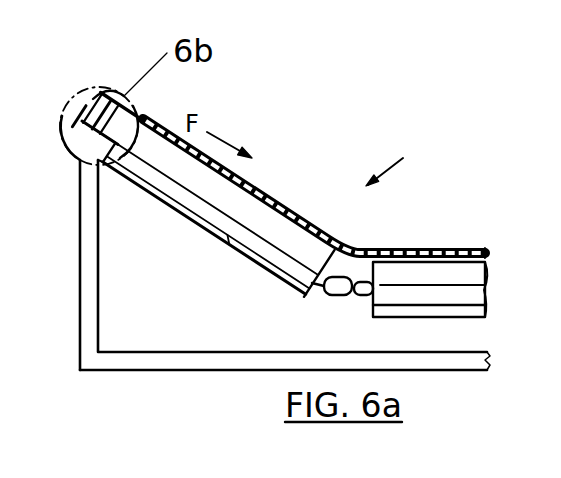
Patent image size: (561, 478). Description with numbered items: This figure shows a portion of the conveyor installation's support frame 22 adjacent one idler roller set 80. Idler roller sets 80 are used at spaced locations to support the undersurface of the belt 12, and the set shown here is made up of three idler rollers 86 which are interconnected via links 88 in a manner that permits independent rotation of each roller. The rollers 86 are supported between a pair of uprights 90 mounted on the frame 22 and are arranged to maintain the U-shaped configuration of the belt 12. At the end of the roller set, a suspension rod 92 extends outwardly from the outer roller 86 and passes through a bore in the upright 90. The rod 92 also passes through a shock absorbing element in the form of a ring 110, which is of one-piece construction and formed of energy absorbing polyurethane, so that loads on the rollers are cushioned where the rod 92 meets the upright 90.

The belt 12 is at (357, 244).
The support frame 22 is at (252, 362).
The idler roller set 80 is at (404, 159).
The idler roller 86 is at (225, 246).
The link 88 is at (336, 298).
The upright 90 is at (86, 244).
The suspension rod 92 is at (130, 112).
The ring 110 is at (108, 93).